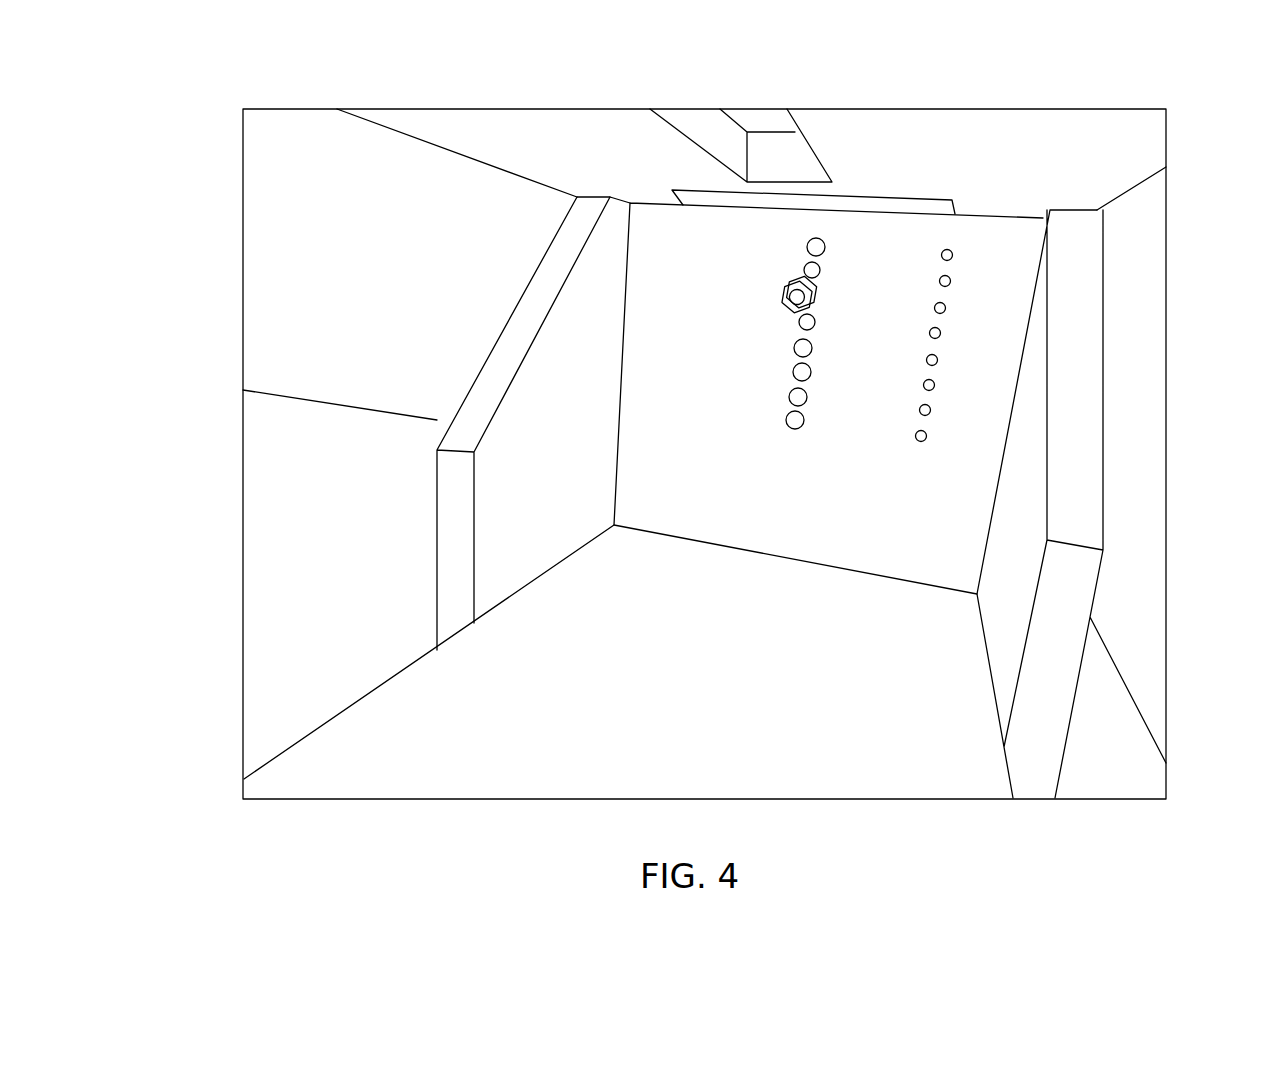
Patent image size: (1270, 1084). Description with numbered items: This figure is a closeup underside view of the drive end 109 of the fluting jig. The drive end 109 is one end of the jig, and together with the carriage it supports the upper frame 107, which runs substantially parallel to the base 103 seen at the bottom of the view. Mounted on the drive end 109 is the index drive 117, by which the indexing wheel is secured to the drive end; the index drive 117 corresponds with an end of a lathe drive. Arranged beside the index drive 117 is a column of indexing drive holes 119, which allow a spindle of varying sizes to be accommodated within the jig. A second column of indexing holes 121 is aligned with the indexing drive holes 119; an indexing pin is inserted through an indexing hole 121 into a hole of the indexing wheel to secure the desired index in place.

The base 103 is at (354, 740).
The upper frame 107 is at (1090, 155).
The drive end 109 is at (280, 183).
The index drive 117 is at (783, 285).
The indexing drive holes 119 is at (793, 373).
The indexing holes 121 is at (953, 255).